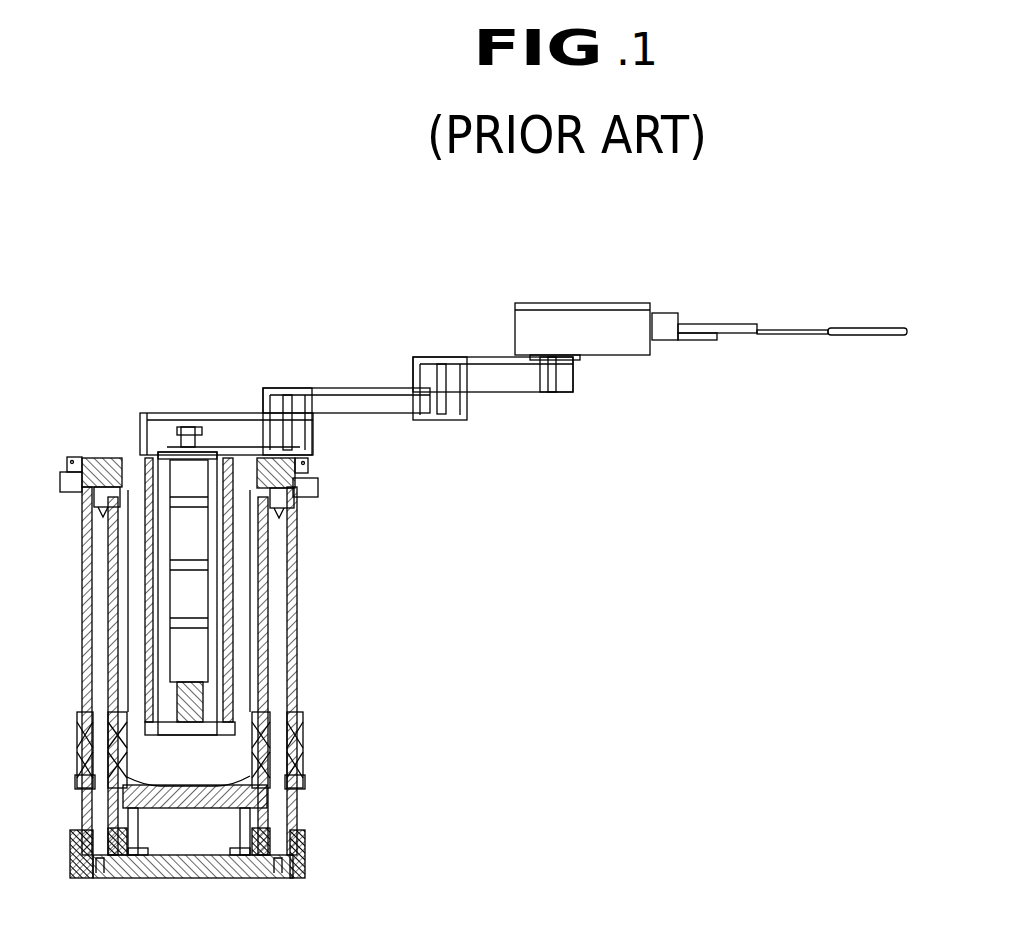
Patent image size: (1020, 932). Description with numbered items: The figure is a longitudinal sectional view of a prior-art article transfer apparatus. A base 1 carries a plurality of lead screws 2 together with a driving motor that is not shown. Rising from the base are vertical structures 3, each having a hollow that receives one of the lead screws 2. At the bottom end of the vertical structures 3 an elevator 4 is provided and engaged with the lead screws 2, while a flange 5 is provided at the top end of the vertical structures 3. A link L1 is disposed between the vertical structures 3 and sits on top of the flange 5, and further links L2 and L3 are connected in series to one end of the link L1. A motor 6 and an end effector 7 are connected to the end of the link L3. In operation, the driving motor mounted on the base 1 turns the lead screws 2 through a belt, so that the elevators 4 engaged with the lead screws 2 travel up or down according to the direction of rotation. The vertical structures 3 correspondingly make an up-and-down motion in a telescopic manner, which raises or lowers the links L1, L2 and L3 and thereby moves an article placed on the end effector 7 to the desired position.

The base 1 is at (302, 862).
The lead screw 2 is at (297, 658).
The vertical structure 3 is at (297, 587).
The elevator 4 is at (302, 753).
The flange 5 is at (318, 482).
The motor 6 is at (557, 305).
The end effector 7 is at (718, 324).
The link L1 is at (177, 413).
The link L2 is at (312, 388).
The link L3 is at (445, 357).